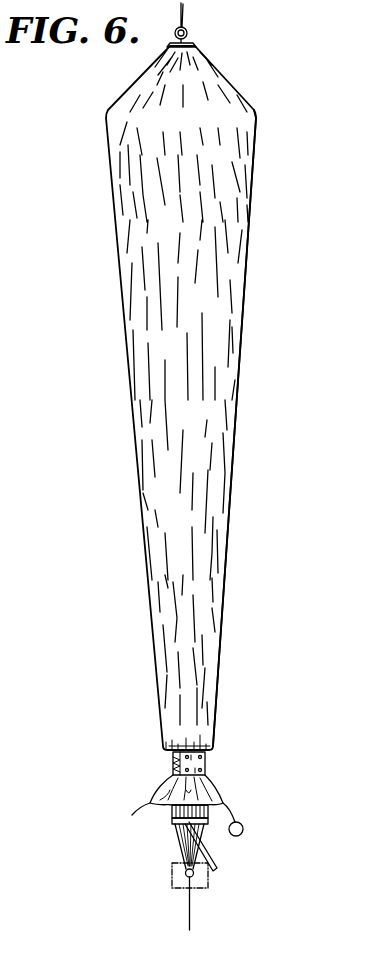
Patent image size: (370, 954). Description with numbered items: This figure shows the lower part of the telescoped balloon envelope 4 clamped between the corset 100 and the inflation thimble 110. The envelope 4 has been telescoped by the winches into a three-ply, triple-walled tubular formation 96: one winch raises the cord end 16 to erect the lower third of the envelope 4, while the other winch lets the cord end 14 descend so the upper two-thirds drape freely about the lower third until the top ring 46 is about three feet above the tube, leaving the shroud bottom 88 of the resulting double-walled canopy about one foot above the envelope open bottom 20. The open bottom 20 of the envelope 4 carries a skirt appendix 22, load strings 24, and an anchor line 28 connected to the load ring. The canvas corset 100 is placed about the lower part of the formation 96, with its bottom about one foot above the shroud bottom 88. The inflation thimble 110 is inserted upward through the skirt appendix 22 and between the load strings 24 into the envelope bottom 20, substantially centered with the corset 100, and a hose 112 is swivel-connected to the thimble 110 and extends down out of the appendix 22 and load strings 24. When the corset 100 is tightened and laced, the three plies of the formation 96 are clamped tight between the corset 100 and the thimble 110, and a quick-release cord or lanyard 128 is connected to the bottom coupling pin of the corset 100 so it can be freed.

The envelope 4 is at (117, 358).
The triple-walled tubular formation 96 is at (242, 408).
The cord end 14 is at (178, 22).
The cord end 16 is at (185, 31).
The top ring 46 is at (189, 34).
The inflation thimble 110 is at (206, 745).
The corset 100 is at (173, 765).
The shroud bottom 88 is at (165, 795).
The open bottom 20 is at (172, 832).
The load strings 24 is at (181, 852).
The skirt appendix 22 is at (172, 882).
The hose 112 is at (216, 861).
The quick-release cord 128 is at (230, 812).
The anchor line 28 is at (191, 908).